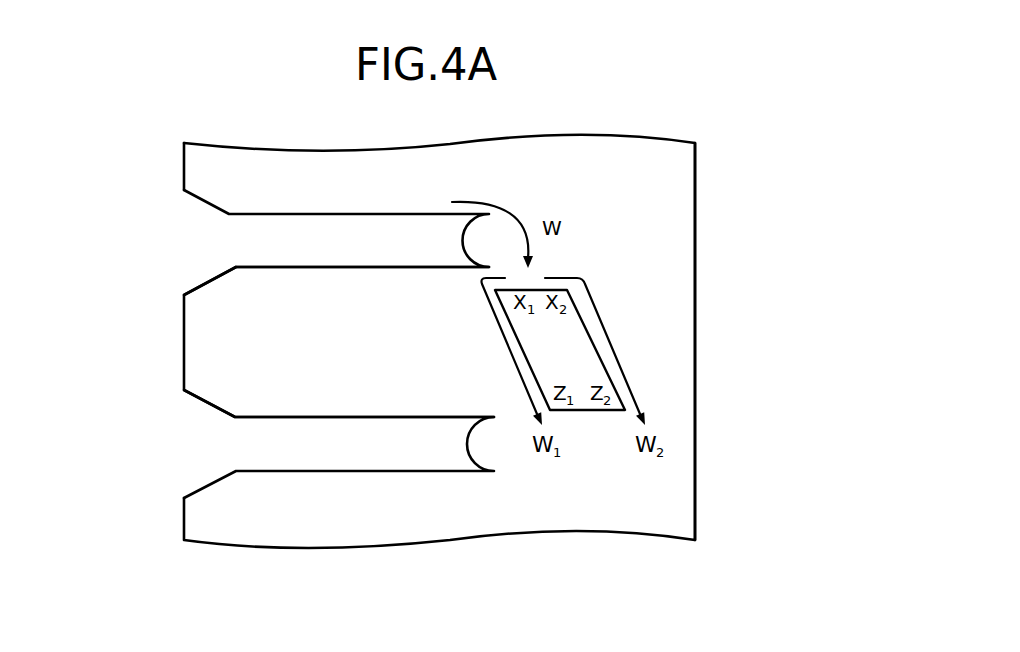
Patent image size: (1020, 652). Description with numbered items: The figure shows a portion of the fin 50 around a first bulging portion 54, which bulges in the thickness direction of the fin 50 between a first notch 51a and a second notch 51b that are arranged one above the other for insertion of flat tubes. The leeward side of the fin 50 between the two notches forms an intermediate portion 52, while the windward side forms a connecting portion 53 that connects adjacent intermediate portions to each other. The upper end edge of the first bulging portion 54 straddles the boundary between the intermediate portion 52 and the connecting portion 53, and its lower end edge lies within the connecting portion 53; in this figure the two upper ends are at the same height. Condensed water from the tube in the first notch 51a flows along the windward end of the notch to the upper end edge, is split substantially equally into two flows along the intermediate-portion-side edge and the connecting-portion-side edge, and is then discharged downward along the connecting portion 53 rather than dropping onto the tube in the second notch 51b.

The fin 50 is at (695, 292).
The first notch 51a is at (258, 241).
The second notch 51b is at (258, 443).
The intermediate portion 52 is at (260, 342).
The connecting portion 53 is at (665, 395).
The first bulging portion 54 is at (558, 343).